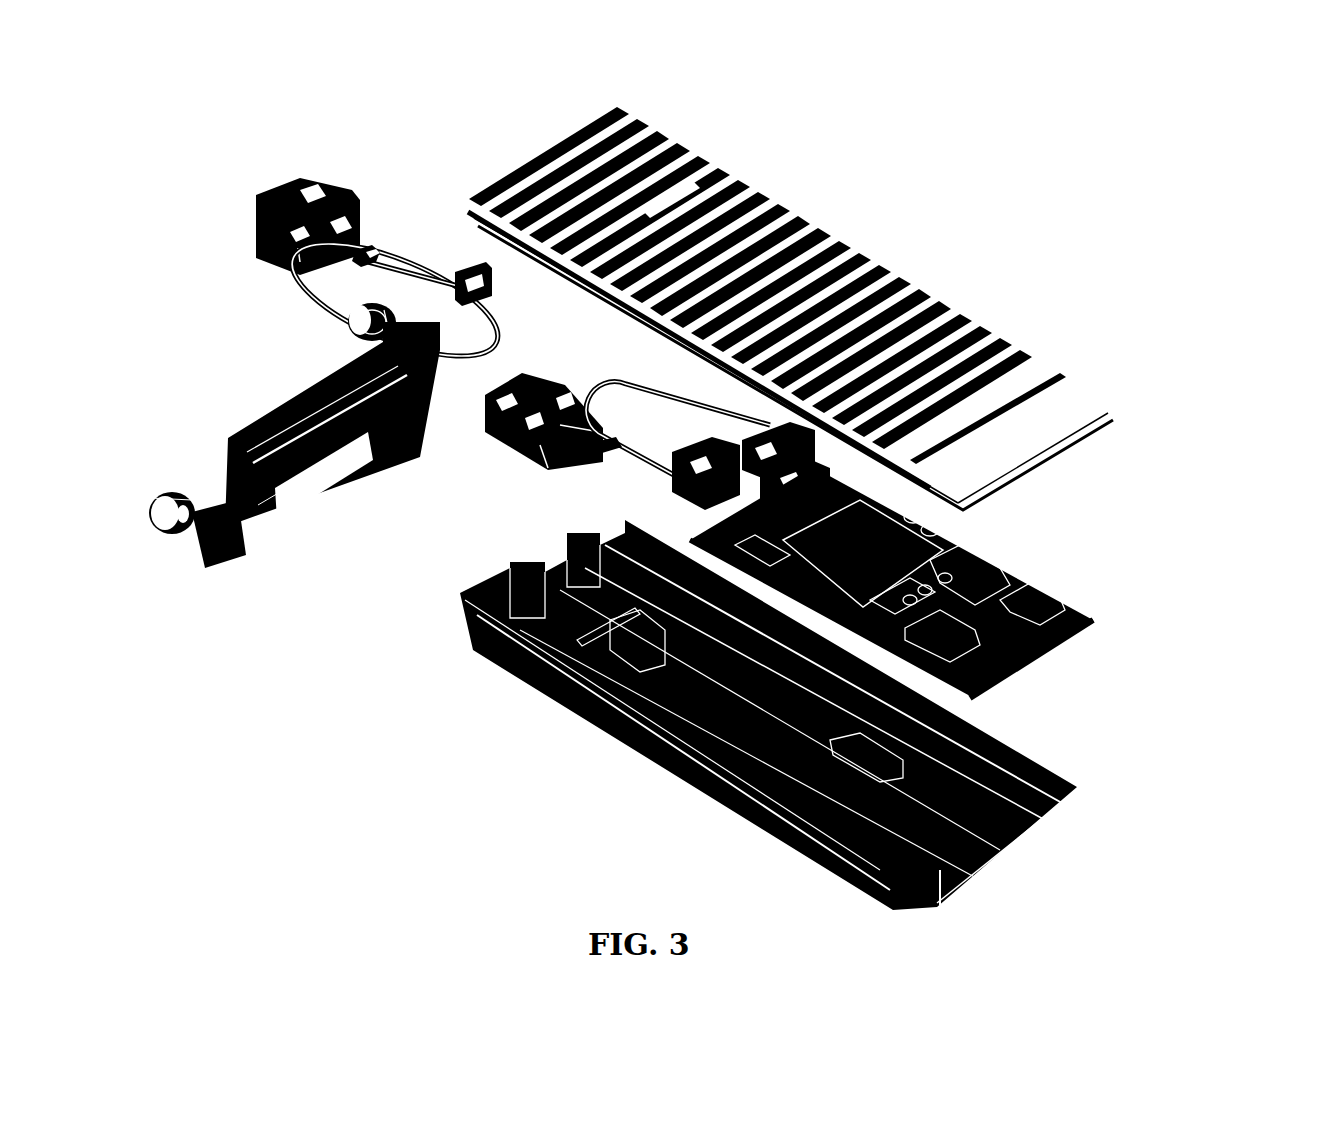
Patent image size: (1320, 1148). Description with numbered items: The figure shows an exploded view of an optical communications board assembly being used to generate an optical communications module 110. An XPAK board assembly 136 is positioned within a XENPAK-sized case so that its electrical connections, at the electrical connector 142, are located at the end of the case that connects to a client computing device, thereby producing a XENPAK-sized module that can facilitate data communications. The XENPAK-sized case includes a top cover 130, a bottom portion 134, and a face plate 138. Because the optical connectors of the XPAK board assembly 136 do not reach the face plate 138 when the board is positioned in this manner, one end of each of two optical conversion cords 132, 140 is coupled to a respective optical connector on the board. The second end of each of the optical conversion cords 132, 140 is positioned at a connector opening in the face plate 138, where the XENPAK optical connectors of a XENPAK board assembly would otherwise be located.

The optical communications module 110 is at (686, 483).
The top cover 130 is at (852, 231).
The optical conversion cord 132 is at (285, 262).
The bottom portion 134 is at (548, 717).
The XPAK board assembly 136 is at (1064, 567).
The face plate 138 is at (271, 398).
The optical conversion cord 140 is at (536, 464).
The electrical connector 142 is at (1035, 653).